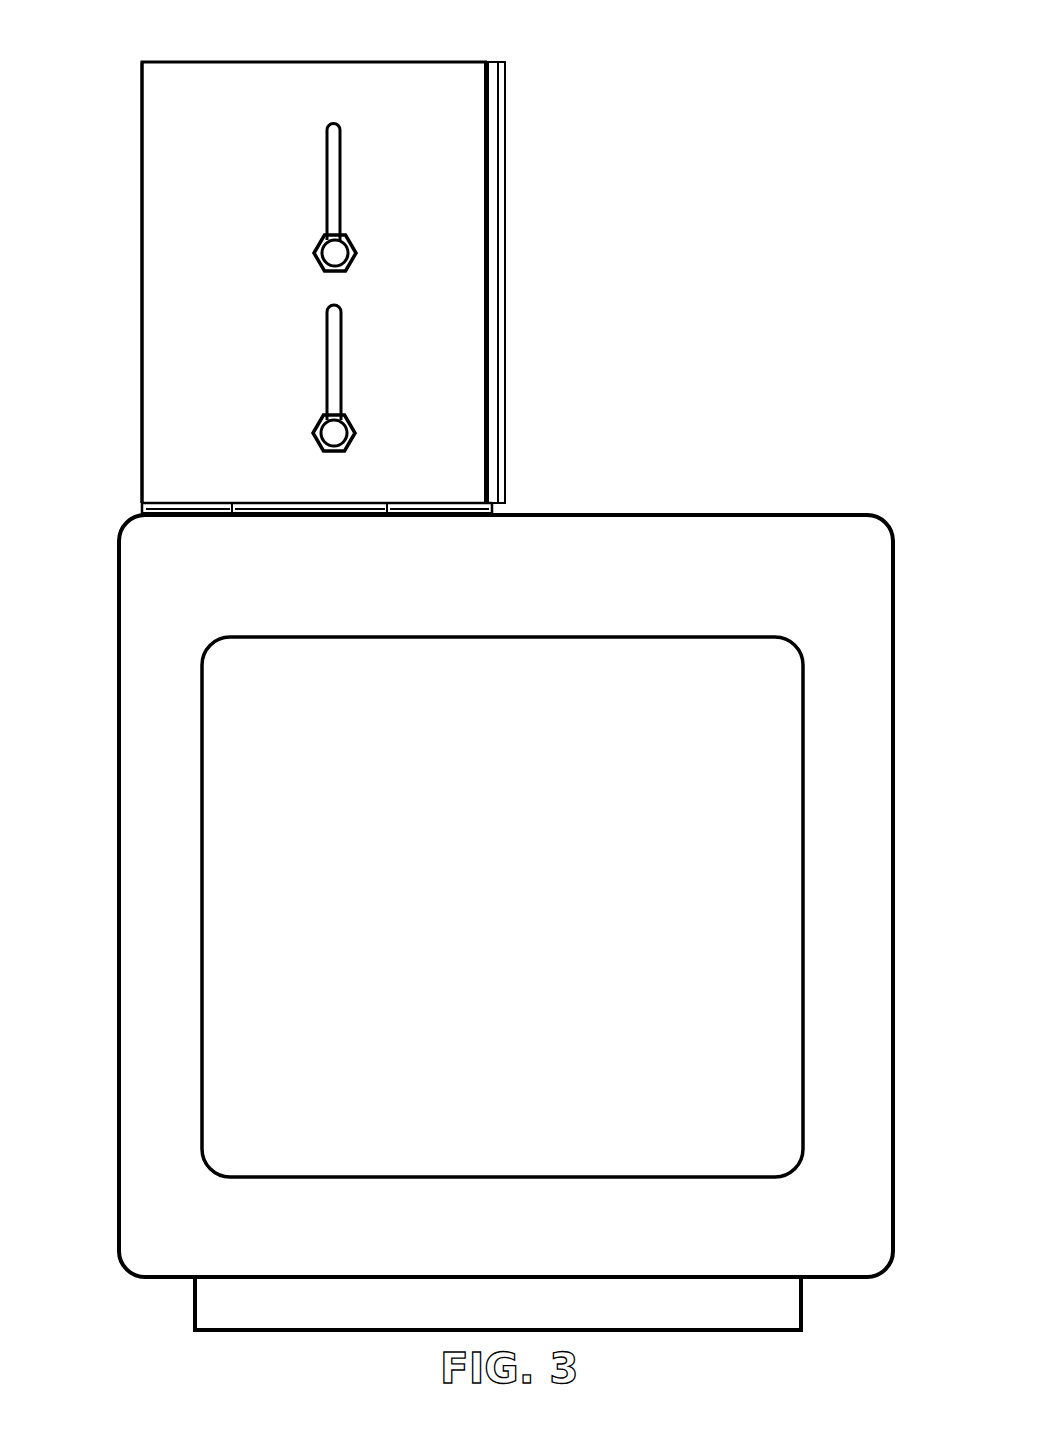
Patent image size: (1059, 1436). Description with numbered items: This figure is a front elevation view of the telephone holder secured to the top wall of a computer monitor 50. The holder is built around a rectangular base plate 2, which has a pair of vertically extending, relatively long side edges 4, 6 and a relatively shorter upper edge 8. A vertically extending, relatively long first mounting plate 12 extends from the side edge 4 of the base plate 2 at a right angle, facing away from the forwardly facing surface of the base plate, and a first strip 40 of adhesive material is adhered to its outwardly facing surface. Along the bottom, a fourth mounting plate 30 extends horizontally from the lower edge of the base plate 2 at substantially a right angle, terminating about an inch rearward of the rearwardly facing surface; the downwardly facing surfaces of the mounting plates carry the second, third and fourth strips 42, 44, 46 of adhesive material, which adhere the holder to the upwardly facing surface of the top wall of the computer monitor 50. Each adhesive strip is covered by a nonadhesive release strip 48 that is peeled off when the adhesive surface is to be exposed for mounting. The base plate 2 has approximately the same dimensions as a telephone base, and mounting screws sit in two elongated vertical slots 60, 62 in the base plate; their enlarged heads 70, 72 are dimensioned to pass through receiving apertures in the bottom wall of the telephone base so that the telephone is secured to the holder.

The base plate 2 is at (458, 303).
The side edge 4 is at (487, 246).
The side edge 6 is at (143, 295).
The upper edge 8 is at (258, 62).
The first mounting plate 12 is at (487, 62).
The fourth mounting plate 30 is at (286, 503).
The first strip of adhesive material 40 is at (494, 103).
The second strip of adhesive material 42 is at (473, 516).
The third strip of adhesive material 44 is at (197, 516).
The fourth strip of adhesive material 46 is at (327, 516).
The nonadhesive release strip 48 is at (507, 183).
The computer monitor 50 is at (895, 1100).
The elongated vertical slot 60 is at (333, 144).
The elongated vertical slot 62 is at (333, 322).
The enlarged head 70 is at (353, 262).
The enlarged head 72 is at (352, 445).